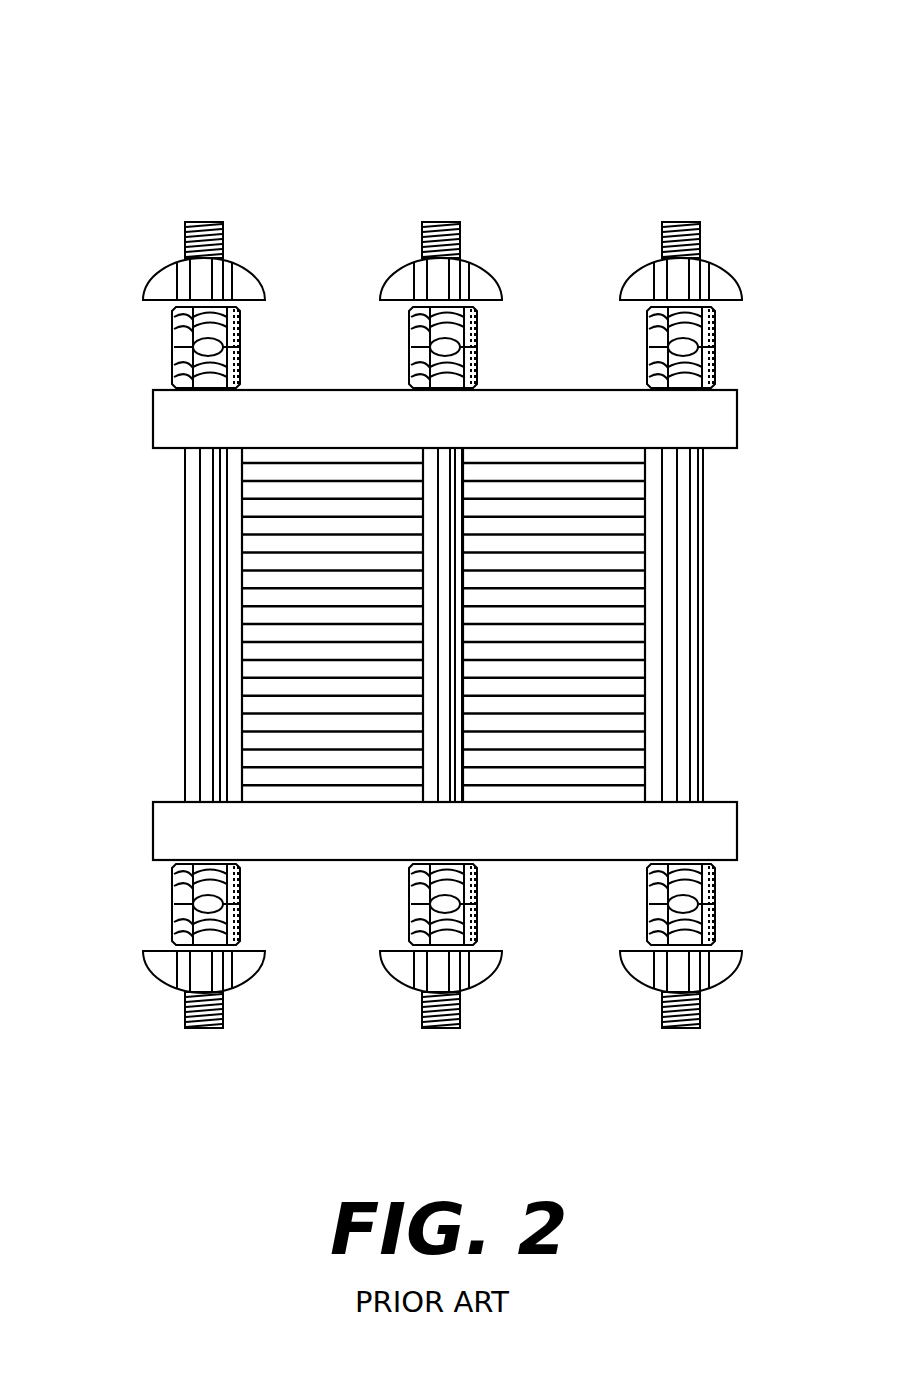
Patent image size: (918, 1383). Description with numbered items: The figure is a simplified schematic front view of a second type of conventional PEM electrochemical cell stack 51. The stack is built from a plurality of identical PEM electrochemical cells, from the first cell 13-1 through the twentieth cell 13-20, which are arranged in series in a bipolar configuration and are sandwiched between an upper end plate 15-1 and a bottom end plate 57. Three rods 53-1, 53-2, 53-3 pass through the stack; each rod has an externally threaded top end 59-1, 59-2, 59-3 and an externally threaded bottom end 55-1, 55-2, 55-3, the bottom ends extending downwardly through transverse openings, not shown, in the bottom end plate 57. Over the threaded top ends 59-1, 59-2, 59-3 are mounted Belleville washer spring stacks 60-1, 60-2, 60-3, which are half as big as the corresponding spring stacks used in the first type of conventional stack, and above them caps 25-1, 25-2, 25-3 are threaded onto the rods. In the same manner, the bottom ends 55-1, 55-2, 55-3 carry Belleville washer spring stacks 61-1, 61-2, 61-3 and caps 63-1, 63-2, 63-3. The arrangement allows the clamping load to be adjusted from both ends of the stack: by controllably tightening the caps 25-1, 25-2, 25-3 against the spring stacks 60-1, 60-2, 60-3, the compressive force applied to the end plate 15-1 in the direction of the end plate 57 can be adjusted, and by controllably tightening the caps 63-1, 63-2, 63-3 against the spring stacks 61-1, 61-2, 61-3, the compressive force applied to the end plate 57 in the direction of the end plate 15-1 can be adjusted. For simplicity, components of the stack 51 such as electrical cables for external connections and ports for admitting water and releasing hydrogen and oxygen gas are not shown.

The second type of conventional PEM electrochemical cell stack 51 is at (329, 102).
The externally threaded top end 59-1 is at (205, 222).
The externally threaded top end 59-2 is at (442, 222).
The externally threaded top end 59-3 is at (682, 222).
The cap 25-1 is at (246, 274).
The cap 25-2 is at (484, 274).
The cap 25-3 is at (722, 274).
The Belleville washer spring stack 60-1 is at (255, 347).
The Belleville washer spring stack 60-2 is at (493, 347).
The Belleville washer spring stack 60-3 is at (731, 347).
The end plate 15-1 is at (168, 418).
The PEM electrochemical cell 13-1 is at (640, 455).
The PEM electrochemical cell 13-20 is at (640, 795).
The rod 53-1 is at (195, 578).
The rod 53-2 is at (437, 628).
The rod 53-3 is at (690, 606).
The bottom end plate 57 is at (168, 828).
The Belleville washer spring stack 61-1 is at (255, 904).
The Belleville washer spring stack 61-2 is at (493, 904).
The Belleville washer spring stack 61-3 is at (731, 904).
The cap 63-1 is at (250, 978).
The cap 63-2 is at (486, 978).
The cap 63-3 is at (726, 978).
The externally threaded bottom end 55-1 is at (205, 1028).
The externally threaded bottom end 55-2 is at (442, 1028).
The externally threaded bottom end 55-3 is at (682, 1028).